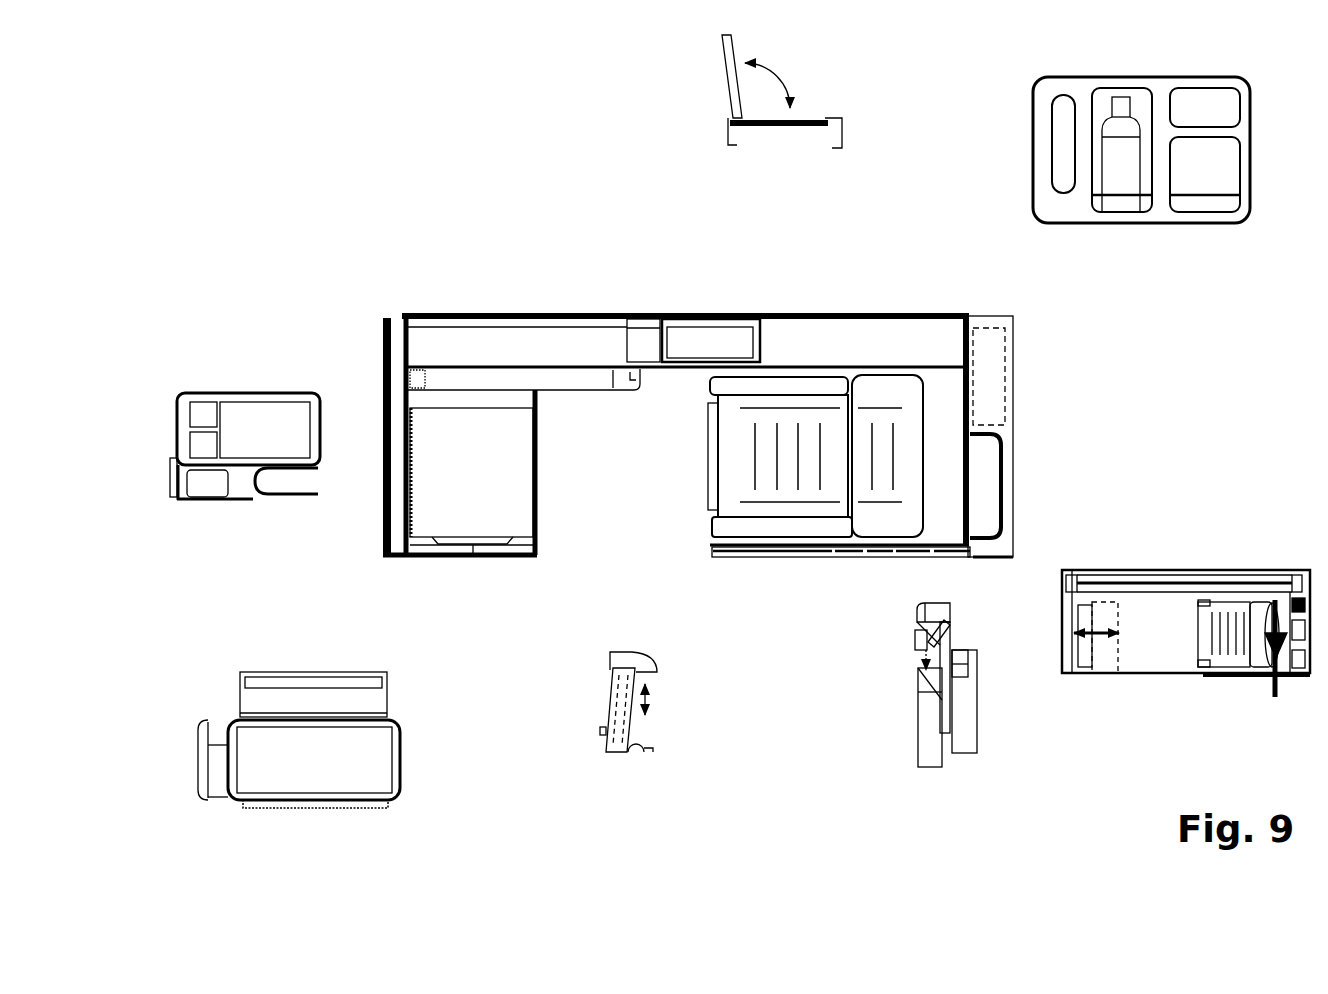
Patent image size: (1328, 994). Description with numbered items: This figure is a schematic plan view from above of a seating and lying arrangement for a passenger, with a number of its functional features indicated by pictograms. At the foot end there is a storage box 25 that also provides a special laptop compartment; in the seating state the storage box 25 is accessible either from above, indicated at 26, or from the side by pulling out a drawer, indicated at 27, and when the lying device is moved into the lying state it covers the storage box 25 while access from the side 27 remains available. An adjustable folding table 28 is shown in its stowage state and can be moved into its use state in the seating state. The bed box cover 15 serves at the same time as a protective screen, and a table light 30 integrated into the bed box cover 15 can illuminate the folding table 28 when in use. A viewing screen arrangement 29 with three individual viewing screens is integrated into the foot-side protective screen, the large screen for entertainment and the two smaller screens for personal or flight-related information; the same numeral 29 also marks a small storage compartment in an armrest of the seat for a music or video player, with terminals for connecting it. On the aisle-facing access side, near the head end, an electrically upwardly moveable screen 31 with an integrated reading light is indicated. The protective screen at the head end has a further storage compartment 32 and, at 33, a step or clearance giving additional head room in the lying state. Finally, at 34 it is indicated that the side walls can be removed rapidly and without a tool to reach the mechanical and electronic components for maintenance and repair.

The bed box cover 15 is at (698, 303).
The storage box 25 is at (380, 608).
The access from above 26 is at (352, 696).
The access from the side 27 is at (187, 778).
The adjustable folding table 28 is at (457, 274).
The viewing screen arrangement 29 is at (424, 544).
The table light 30 is at (734, 198).
The electrically upwardly moveable screen 31 is at (844, 657).
The further storage compartment 32 is at (1111, 251).
The step or clearance 33 is at (1037, 486).
The removable side walls 34 is at (1129, 627).